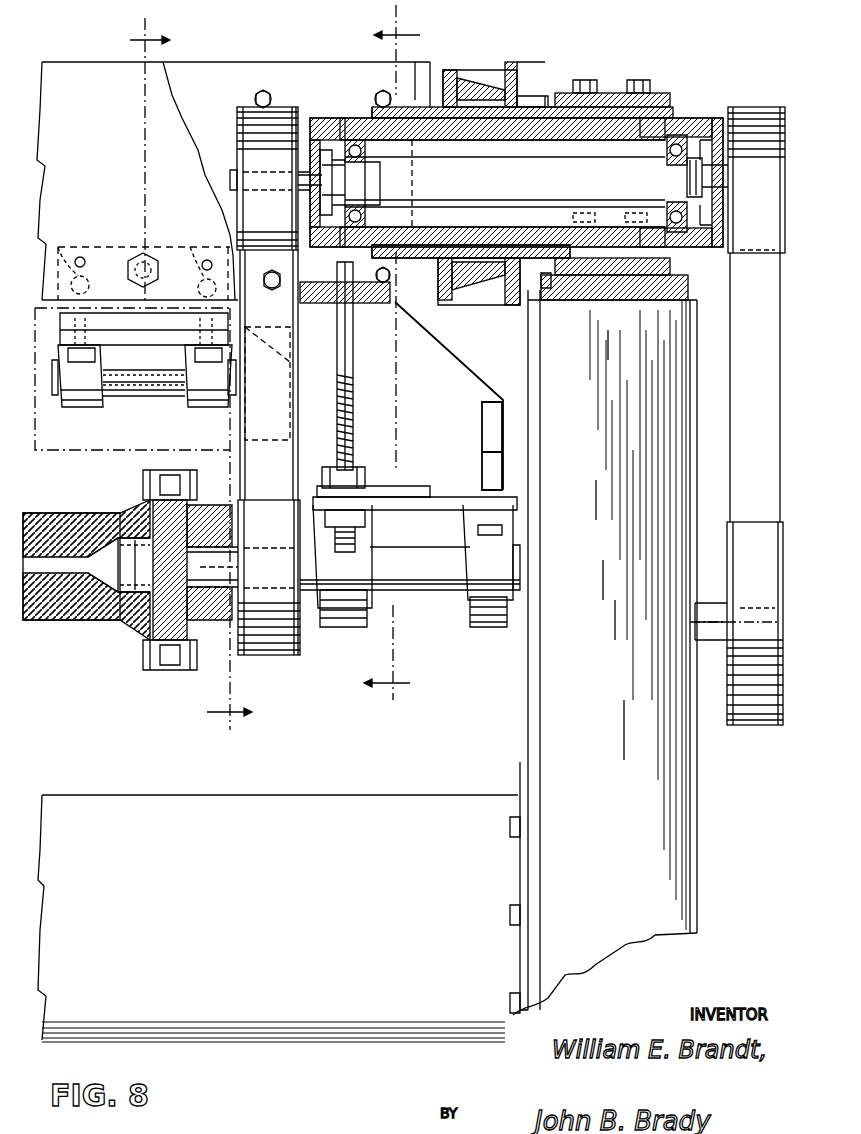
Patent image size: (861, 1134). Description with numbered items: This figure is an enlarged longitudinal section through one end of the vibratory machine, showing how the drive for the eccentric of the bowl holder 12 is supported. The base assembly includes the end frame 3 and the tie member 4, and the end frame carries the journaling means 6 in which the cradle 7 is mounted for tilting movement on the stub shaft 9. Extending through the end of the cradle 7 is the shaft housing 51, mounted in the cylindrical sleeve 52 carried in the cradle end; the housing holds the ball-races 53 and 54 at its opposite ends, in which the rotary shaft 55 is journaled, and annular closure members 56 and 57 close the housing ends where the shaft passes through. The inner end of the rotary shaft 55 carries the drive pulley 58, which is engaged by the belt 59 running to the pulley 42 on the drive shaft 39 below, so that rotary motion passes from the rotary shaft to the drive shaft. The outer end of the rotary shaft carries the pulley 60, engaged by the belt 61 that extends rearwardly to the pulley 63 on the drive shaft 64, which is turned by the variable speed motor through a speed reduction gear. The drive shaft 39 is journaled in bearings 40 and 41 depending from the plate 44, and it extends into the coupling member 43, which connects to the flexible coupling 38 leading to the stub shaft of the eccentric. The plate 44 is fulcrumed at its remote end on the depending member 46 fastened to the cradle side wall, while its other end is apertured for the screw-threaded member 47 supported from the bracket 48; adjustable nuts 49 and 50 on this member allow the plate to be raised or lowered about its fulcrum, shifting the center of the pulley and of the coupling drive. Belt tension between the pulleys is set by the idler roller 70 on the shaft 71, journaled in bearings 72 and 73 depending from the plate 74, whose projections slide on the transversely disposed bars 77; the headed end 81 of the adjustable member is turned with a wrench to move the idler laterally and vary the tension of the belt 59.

The end frame 3 is at (680, 870).
The tie member 4 is at (328, 815).
The journaling means 6 is at (606, 95).
The cradle 7 is at (90, 78).
The stub shaft 9 is at (191, 377).
The holder 12 is at (392, 359).
The flexible coupling 38 is at (68, 625).
The drive shaft 39 is at (424, 592).
The bearing 40 is at (340, 618).
The bearing 41 is at (494, 625).
The pulley 42 is at (298, 632).
The coupling member 43 is at (203, 650).
The plate 44 is at (432, 508).
The depending member 46 is at (455, 398).
The screw-threaded member 47 is at (350, 355).
The bracket 48 is at (370, 298).
The adjustable nut 49 is at (375, 470).
The adjustable nut 50 is at (385, 503).
The shaft housing 51 is at (528, 100).
The cylindrical sleeve 52 is at (430, 95).
The ball-race 53 is at (348, 125).
The ball-race 54 is at (688, 125).
The rotary shaft 55 is at (540, 182).
The annular closure member 56 is at (322, 118).
The annular closure member 57 is at (722, 120).
The drive pulley 58 is at (236, 112).
The belt 59 is at (255, 520).
The pulley 60 is at (788, 155).
The belt 61 is at (748, 462).
The pulley 63 is at (722, 708).
The drive shaft 64 is at (718, 618).
The idler roller 70 is at (258, 410).
The shaft 71 is at (142, 395).
The bearing 72 is at (80, 405).
The bearing 73 is at (205, 405).
The plate 74 is at (144, 340).
The transversely disposed bar 77 is at (134, 257).
The headed end 81 is at (141, 258).